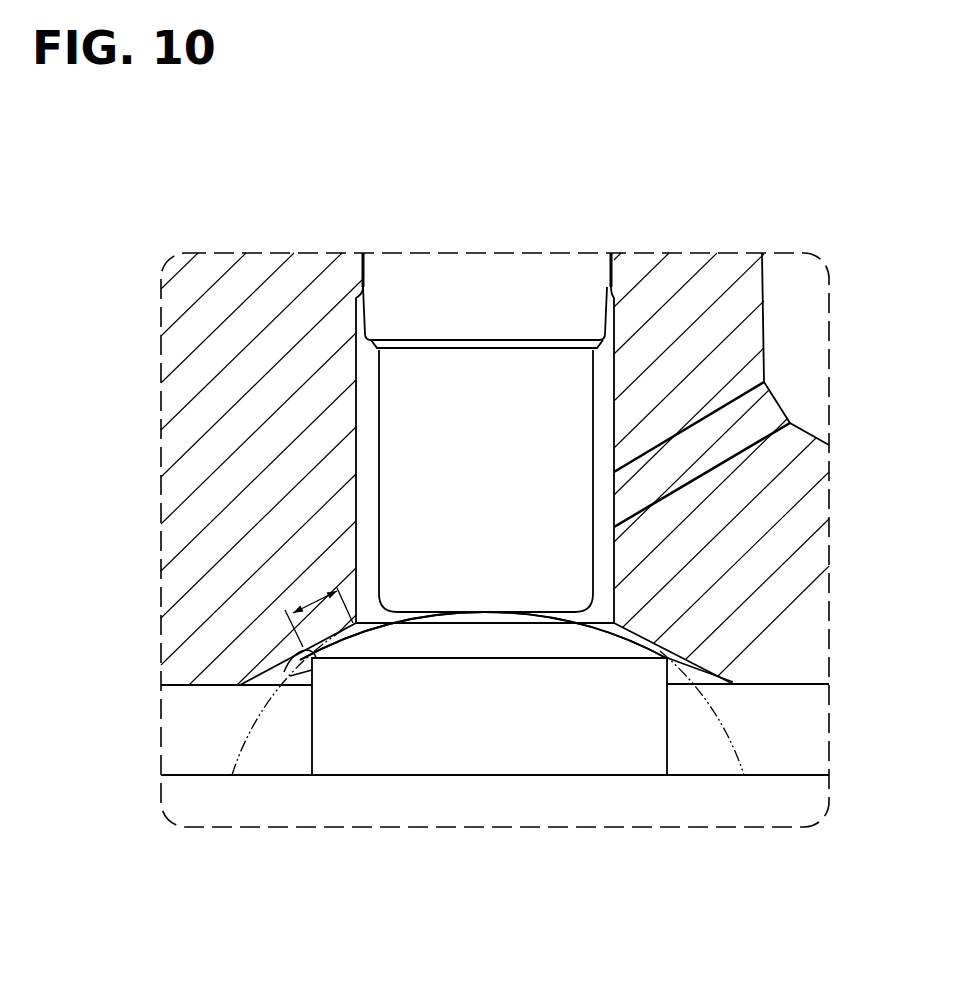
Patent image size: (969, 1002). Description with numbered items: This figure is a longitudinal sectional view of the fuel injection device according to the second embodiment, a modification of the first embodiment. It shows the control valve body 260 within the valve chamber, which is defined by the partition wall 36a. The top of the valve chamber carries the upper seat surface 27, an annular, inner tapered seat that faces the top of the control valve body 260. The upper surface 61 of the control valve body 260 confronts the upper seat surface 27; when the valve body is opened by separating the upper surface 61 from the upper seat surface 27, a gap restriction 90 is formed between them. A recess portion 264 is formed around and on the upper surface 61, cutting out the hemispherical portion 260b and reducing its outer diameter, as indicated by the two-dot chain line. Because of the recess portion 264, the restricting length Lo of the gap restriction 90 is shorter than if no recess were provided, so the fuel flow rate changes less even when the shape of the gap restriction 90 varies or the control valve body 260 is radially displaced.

The control valve body 260 is at (205, 813).
The hemispherical portion 260b is at (620, 727).
The recess portion 264 is at (266, 700).
The upper surface 61 is at (284, 672).
The gap restriction 90 is at (722, 670).
The partition wall 36a is at (345, 632).
The upper seat surface 27 is at (345, 632).
The restricting length Lo is at (293, 612).